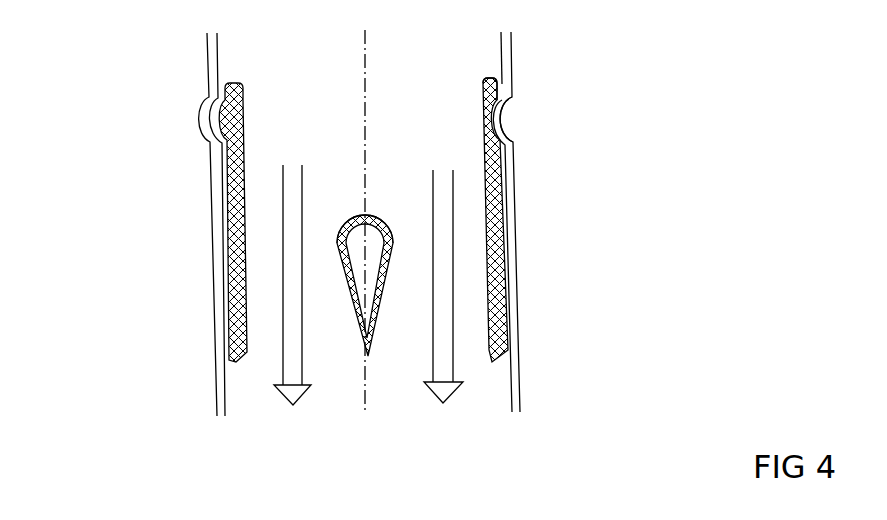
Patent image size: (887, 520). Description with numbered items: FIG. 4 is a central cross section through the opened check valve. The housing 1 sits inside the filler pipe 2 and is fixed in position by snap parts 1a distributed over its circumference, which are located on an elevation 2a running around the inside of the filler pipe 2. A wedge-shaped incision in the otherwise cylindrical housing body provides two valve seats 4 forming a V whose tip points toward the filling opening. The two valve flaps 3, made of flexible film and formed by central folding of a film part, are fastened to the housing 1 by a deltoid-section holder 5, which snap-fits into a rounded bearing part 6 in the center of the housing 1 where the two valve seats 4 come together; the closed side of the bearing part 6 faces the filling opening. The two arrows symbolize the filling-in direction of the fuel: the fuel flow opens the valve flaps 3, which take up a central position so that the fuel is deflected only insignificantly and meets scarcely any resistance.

The housing 1 is at (391, 248).
The snap parts 1a is at (508, 102).
The filler pipe 2 is at (505, 57).
The elevation 2a is at (503, 120).
The valve flaps 3 is at (340, 328).
The valve seats 4 is at (365, 243).
The holder 5 is at (336, 270).
The bearing part 6 is at (365, 243).